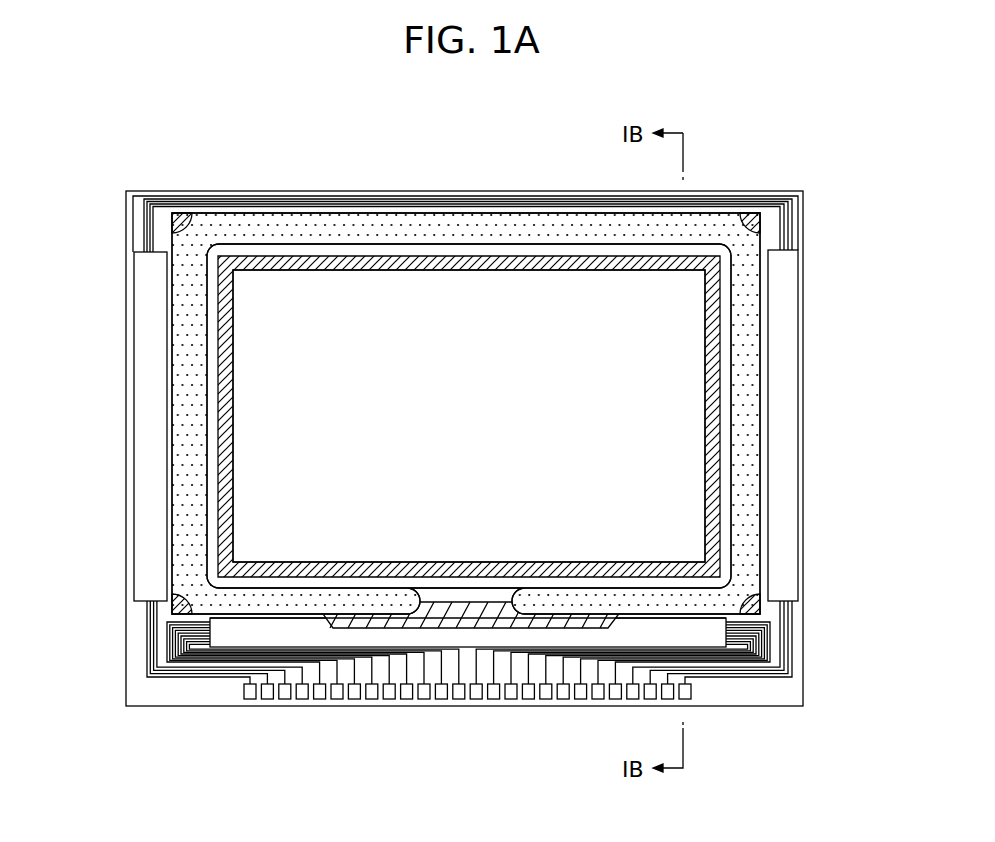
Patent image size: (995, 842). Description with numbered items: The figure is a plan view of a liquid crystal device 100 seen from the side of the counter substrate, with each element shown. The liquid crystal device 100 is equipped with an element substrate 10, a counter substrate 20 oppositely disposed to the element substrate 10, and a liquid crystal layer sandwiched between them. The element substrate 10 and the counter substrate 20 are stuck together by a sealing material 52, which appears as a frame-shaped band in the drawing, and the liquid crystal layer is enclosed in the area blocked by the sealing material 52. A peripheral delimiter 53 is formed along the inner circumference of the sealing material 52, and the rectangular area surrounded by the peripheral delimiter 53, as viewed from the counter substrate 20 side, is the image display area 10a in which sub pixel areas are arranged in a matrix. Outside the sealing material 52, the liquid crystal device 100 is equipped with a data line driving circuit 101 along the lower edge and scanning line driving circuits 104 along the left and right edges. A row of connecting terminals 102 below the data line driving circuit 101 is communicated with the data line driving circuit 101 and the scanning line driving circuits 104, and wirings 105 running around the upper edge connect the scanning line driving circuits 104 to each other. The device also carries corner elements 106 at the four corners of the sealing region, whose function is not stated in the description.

The liquid crystal device 100 is at (786, 163).
The element substrate 10 is at (471, 191).
The image display area 10a is at (277, 347).
The counter substrate 20 is at (566, 213).
The sealing material 52 is at (748, 396).
The peripheral delimiter 53 is at (713, 320).
The data line driving circuit 101 is at (254, 638).
The connecting terminals 102 is at (380, 690).
The scanning line driving circuits 104 is at (145, 421).
The wirings 105 is at (342, 196).
The inter-substrate conduction portions 106 is at (174, 212).